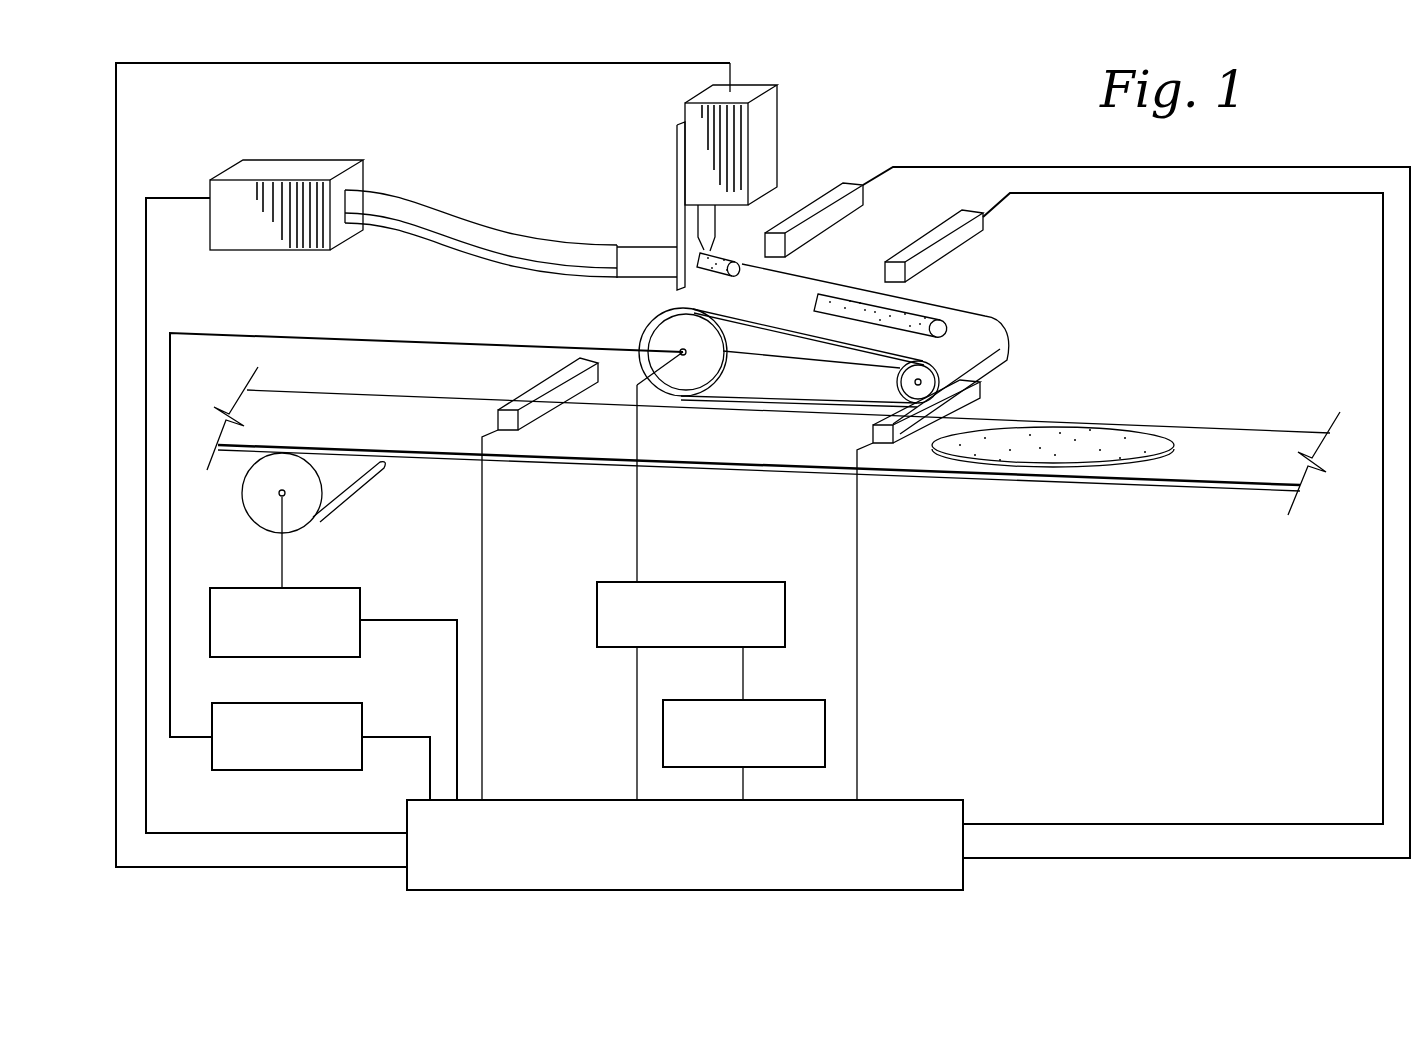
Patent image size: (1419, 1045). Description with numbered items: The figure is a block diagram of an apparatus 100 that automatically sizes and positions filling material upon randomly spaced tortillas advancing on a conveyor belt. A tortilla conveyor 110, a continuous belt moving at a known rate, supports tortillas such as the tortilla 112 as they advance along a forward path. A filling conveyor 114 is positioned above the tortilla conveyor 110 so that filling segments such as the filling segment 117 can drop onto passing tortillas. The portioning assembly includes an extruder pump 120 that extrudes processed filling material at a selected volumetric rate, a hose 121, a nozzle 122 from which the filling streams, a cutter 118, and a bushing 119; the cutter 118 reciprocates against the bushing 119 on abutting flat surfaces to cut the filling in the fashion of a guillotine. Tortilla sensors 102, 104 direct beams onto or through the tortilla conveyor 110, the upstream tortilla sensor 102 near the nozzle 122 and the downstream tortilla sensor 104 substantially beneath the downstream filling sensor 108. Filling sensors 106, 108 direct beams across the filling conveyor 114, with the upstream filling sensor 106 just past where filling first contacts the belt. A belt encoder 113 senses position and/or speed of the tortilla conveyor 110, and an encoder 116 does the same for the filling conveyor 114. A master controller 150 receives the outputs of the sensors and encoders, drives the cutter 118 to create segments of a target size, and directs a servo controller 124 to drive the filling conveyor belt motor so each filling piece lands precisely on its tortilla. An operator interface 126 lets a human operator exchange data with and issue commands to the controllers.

The apparatus 100 is at (1288, 140).
The upstream tortilla sensor 102 is at (542, 380).
The downstream tortilla sensor 104 is at (973, 384).
The upstream filling sensor 106 is at (853, 186).
The downstream filling sensor 108 is at (972, 238).
The tortilla conveyor 110 is at (1243, 437).
The tortilla 112 is at (1079, 432).
The belt encoder 113 is at (305, 588).
The filling conveyor 114 is at (962, 313).
The encoder 116 is at (305, 703).
The filling segment 117 is at (828, 292).
The cutter 118 is at (768, 113).
The bushing 119 is at (677, 217).
The extruder pump 120 is at (295, 157).
The hose 121 is at (433, 195).
The nozzle 122 is at (648, 276).
The servo controller 124 is at (715, 582).
The operator interface 126 is at (763, 700).
The master controller 150 is at (885, 798).